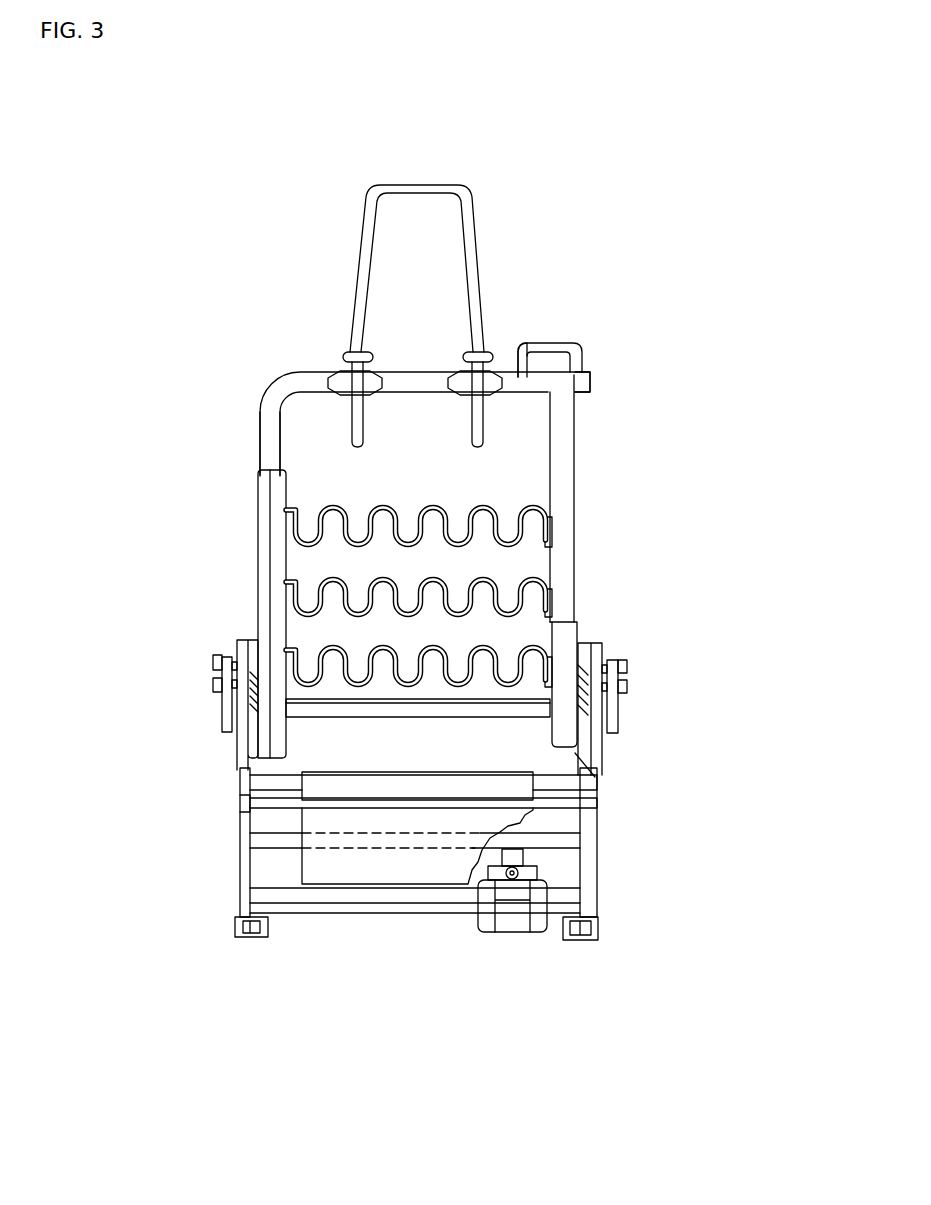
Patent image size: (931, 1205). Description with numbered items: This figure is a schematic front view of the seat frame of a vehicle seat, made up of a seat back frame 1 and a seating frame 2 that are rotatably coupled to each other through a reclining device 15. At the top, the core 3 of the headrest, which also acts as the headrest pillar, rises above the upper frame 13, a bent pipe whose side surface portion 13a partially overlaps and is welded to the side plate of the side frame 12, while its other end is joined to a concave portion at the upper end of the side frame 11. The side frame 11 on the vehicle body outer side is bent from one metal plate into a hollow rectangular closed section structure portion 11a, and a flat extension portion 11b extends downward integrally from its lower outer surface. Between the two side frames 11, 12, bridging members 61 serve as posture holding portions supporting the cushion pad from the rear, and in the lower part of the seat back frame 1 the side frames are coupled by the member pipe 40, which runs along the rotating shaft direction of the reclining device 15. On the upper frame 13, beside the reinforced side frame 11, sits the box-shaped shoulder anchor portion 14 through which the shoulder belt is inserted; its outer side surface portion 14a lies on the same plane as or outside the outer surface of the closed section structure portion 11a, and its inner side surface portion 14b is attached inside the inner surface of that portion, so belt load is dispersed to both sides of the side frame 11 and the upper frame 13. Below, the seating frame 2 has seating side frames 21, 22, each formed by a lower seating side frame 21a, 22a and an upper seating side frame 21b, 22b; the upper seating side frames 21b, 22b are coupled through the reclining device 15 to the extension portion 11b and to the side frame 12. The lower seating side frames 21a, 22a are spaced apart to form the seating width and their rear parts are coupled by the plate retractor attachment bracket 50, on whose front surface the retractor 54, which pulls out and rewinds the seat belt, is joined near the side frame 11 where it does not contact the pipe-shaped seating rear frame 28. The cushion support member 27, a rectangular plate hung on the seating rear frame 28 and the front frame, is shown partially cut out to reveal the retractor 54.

The seat back frame 1 is at (184, 350).
The seating frame 2 is at (748, 712).
The core 3 is at (437, 185).
The side frame 11 is at (740, 518).
The closed section structure portion 11a is at (572, 562).
The extension portion 11b is at (578, 624).
The side frame 12 is at (265, 505).
The upper frame 13 is at (280, 383).
The side surface portion 13a is at (268, 430).
The shoulder anchor portion 14 is at (568, 343).
The outer side surface portion 14a is at (586, 366).
The inner side surface portion 14b is at (513, 352).
The reclining device 15 is at (208, 670).
The seating side frame 21 is at (740, 747).
The lower seating side frame 21a is at (597, 800).
The upper seating side frame 21b is at (597, 775).
The seating side frame 22 is at (90, 817).
The lower seating side frame 22a is at (250, 800).
The upper seating side frame 22b is at (250, 766).
The cushion support member 27 is at (333, 865).
The seating rear frame 28 is at (270, 838).
The member pipe 40 is at (330, 713).
The retractor attachment bracket 50 is at (413, 913).
The retractor 54 is at (512, 918).
The bridging members 61 is at (338, 650).